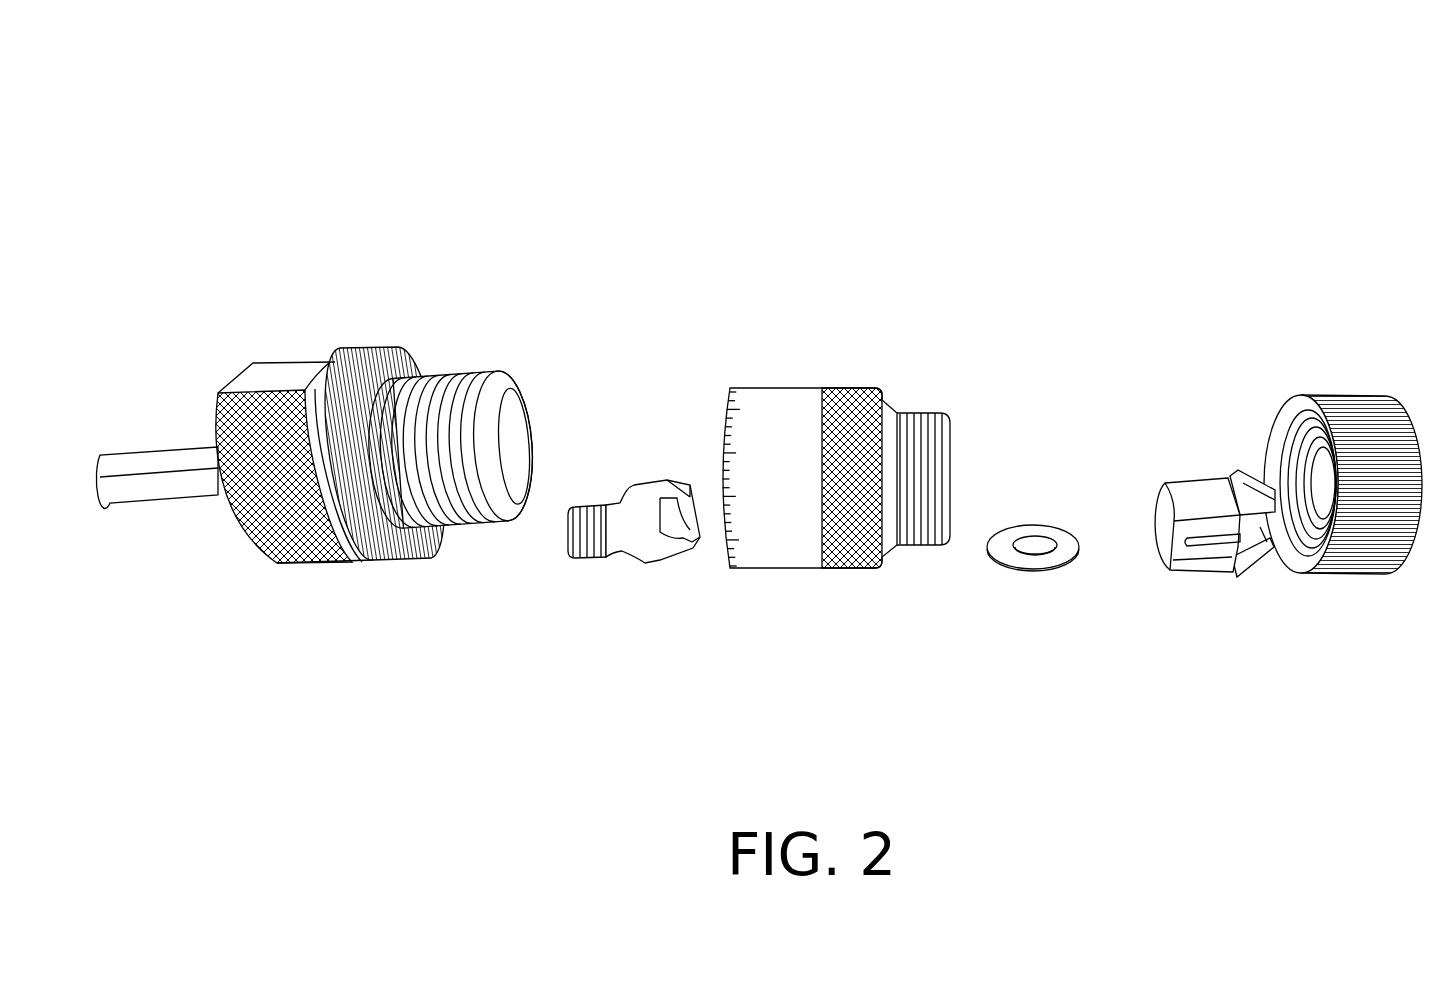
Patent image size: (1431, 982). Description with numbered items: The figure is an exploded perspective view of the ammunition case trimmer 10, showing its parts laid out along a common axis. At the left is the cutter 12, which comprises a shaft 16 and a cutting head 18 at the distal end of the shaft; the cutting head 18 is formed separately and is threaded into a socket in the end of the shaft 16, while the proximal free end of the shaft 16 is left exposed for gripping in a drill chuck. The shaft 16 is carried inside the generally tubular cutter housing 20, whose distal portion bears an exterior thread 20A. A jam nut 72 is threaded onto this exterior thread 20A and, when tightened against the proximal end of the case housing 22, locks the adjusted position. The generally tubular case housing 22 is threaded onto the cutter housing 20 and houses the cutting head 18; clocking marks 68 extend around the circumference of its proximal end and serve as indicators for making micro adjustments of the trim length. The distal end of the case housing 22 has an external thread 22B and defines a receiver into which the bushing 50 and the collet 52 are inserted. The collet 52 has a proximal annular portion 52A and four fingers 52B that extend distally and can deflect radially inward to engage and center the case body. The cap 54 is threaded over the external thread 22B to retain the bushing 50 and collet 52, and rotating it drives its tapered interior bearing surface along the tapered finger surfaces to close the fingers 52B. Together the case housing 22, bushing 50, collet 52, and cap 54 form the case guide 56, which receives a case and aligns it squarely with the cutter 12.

The trimmer 10 is at (1058, 137).
The cutter 12 is at (358, 506).
The shaft 16 is at (168, 460).
The cutting head 18 is at (655, 563).
The cutter housing 20 is at (309, 350).
The exterior thread 20A is at (454, 397).
The case housing 22 is at (811, 428).
The external thread 22B is at (920, 414).
The bushing 50 is at (1050, 575).
The collet 52 is at (1234, 525).
The proximal annular portion 52A is at (1190, 498).
The fingers 52B is at (1243, 472).
The cap 54 is at (1353, 393).
The case guide 56 is at (1109, 350).
The clocking marks 68 is at (732, 390).
The jam nut 72 is at (381, 344).